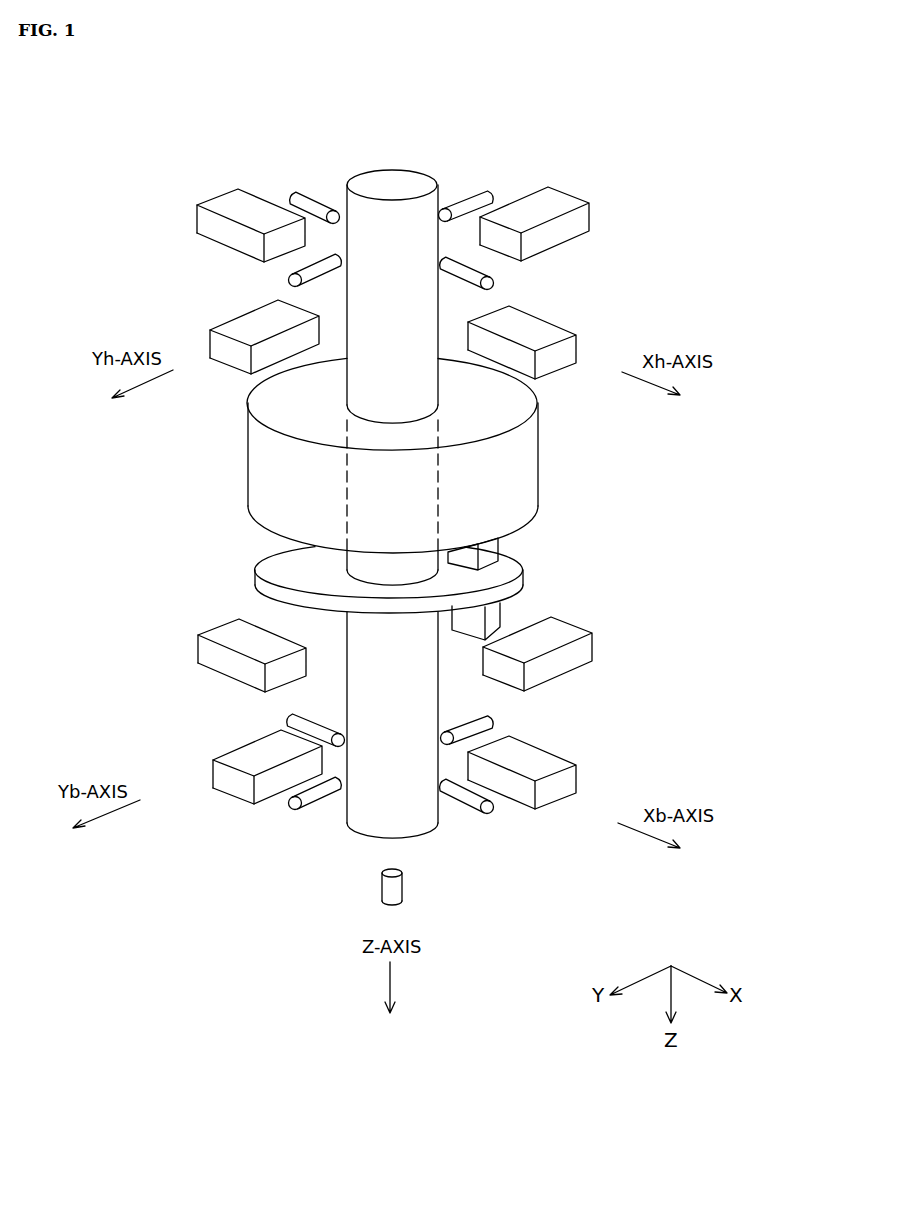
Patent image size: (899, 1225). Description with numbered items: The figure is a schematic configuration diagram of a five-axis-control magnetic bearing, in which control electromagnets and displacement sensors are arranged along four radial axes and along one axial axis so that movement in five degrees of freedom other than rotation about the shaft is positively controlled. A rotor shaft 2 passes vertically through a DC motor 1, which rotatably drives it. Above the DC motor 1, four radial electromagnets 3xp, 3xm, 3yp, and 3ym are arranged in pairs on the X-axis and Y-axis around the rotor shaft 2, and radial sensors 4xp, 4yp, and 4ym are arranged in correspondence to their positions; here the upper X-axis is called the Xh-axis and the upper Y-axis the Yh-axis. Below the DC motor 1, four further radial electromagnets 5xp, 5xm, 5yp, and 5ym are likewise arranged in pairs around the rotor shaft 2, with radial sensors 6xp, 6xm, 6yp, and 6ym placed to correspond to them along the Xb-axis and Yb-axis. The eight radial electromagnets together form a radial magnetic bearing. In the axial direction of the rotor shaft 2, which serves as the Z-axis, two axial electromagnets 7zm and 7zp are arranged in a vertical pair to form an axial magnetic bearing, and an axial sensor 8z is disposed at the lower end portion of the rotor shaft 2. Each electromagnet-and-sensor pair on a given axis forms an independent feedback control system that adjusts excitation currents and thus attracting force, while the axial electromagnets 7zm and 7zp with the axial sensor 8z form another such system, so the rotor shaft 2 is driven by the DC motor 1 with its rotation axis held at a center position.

The DC motor 1 is at (528, 463).
The rotor shaft 2 is at (412, 182).
The radial electromagnet 3xm is at (222, 232).
The radial electromagnet 3ym is at (565, 233).
The radial electromagnet 3xp is at (565, 362).
The radial electromagnet 3yp is at (232, 357).
The radial sensor 4ym is at (303, 197).
The radial sensor 4yp is at (294, 280).
The radial sensor 4xp is at (493, 281).
The radial electromagnet 5xm is at (228, 663).
The radial electromagnet 5ym is at (553, 635).
The radial electromagnet 5xp is at (568, 787).
The radial electromagnet 5yp is at (228, 780).
The radial sensor 6xm is at (293, 718).
The radial sensor 6ym is at (485, 728).
The radial sensor 6yp is at (295, 806).
The radial sensor 6xp is at (489, 809).
The axial electromagnet 7zm is at (500, 553).
The axial electromagnet 7zp is at (471, 631).
The axial sensor 8z is at (394, 892).